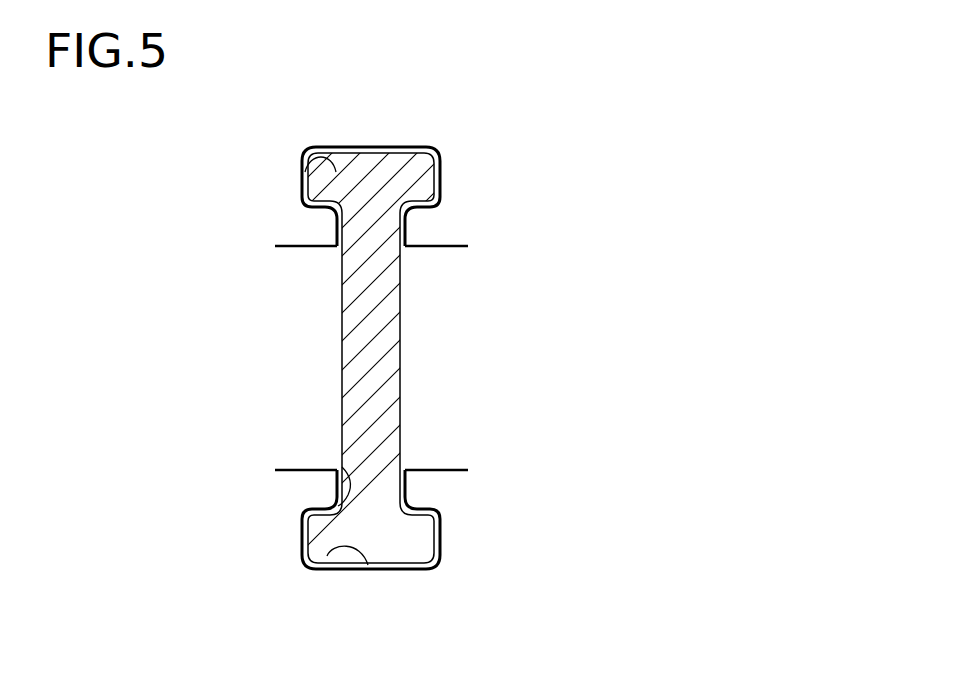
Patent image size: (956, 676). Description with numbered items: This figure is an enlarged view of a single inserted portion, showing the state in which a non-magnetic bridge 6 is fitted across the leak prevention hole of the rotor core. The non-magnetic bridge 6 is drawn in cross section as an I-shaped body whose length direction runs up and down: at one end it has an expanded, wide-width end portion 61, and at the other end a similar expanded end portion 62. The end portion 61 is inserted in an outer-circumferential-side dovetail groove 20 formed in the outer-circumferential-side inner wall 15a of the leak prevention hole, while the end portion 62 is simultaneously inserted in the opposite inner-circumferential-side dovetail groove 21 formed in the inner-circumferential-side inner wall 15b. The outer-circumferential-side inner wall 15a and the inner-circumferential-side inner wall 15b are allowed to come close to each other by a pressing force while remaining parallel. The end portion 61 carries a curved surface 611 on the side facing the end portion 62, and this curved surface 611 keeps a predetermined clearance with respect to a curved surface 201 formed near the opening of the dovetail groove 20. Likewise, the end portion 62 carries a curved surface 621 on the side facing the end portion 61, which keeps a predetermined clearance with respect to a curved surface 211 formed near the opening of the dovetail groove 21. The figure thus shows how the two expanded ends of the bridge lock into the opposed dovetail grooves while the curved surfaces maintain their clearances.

The non-magnetic bridge 6 is at (373, 350).
The outer-circumferential-side dovetail groove 20 is at (330, 172).
The inner-circumferential-side dovetail groove 21 is at (327, 556).
The curved surface 201 is at (342, 252).
The curved surface 211 is at (342, 467).
The end portion 61 is at (378, 168).
The curved surface 611 is at (413, 208).
The end portion 62 is at (390, 528).
The curved surface 621 is at (417, 503).
The outer-circumferential-side inner wall 15a is at (430, 247).
The inner-circumferential-side inner wall 15b is at (430, 470).